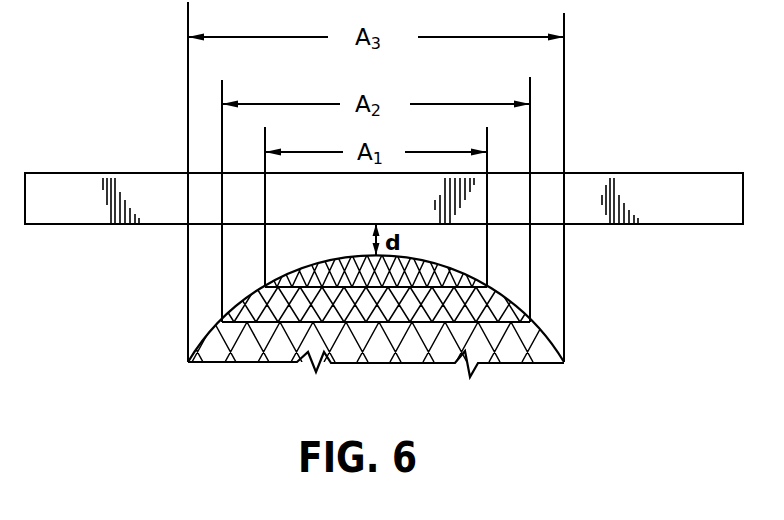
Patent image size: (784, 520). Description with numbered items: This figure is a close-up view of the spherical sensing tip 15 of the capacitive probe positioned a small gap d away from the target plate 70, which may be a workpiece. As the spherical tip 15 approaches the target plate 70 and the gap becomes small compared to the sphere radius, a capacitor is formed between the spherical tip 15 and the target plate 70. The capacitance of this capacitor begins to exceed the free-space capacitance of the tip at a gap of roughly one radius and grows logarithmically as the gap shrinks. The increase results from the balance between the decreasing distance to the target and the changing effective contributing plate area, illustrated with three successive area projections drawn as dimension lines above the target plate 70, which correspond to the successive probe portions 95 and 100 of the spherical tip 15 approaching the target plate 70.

The target plate 70 is at (723, 174).
The spherical sensing tip 15 is at (545, 345).
The probe portion 95 is at (372, 302).
The probe portion 100 is at (232, 352).